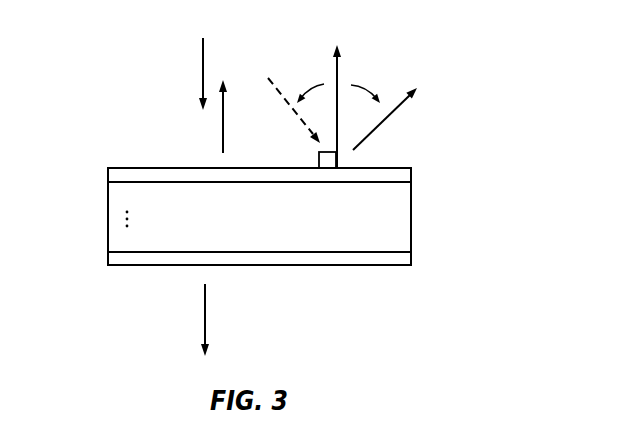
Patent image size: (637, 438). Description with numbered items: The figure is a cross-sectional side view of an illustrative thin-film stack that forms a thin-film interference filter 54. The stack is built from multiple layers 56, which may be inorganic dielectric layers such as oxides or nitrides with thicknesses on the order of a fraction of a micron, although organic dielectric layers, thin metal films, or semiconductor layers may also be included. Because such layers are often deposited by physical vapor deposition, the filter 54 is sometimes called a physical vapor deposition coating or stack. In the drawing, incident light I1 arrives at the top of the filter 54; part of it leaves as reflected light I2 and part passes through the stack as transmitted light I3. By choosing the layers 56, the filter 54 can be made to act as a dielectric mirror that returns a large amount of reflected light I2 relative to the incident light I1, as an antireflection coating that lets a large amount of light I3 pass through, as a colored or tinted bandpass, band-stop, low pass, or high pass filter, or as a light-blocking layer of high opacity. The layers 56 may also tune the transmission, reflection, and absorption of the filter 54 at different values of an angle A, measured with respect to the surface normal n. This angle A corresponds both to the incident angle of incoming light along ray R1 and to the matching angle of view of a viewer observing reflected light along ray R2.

The thin-film interference filter 54 is at (93, 152).
The layers 56 is at (407, 174).
The surface normal n is at (336, 96).
The incident light I1 is at (194, 74).
The reflected light I2 is at (230, 116).
The transmitted light I3 is at (213, 320).
The incoming light ray R1 is at (285, 101).
The reflected light ray R2 is at (390, 109).
The angle A is at (338, 85).